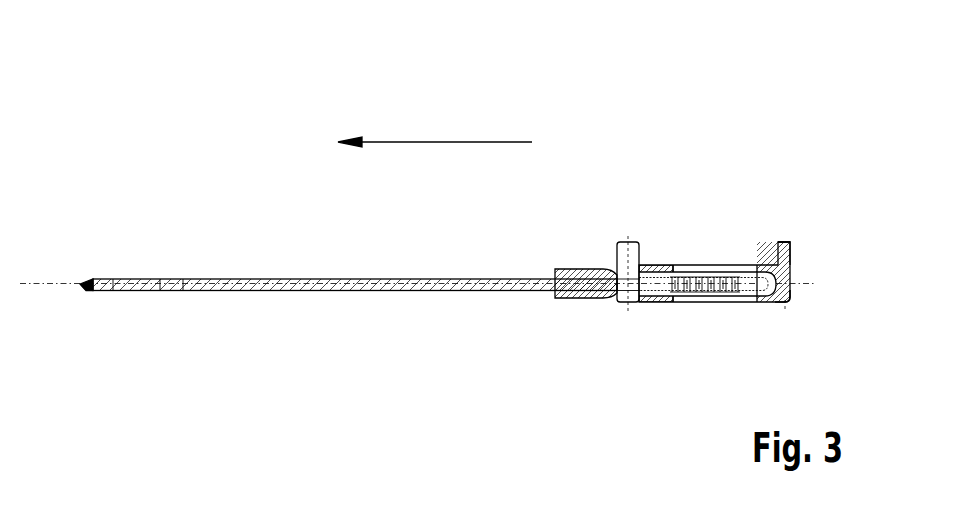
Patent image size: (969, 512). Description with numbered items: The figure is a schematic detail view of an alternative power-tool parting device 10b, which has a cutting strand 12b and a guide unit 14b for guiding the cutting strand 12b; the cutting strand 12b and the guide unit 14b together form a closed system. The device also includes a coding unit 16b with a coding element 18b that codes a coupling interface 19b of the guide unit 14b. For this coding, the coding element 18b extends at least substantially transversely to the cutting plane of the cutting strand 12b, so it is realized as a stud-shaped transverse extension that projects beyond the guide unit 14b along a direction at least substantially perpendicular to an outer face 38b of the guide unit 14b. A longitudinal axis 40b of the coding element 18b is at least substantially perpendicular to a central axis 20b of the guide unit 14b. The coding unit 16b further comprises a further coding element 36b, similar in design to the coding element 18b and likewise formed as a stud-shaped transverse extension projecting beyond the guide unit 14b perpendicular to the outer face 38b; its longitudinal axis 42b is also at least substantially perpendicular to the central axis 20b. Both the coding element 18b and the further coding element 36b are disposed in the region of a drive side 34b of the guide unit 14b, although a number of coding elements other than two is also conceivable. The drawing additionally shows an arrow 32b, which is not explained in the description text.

The power-tool parting device 10b is at (438, 221).
The cutting strand 12b is at (92, 278).
The guide unit 14b is at (262, 278).
The coding unit 16b is at (595, 346).
The coding element 18b is at (792, 262).
The coupling interface 19b is at (736, 336).
The central axis 20b is at (72, 293).
The puncturing direction 32b is at (447, 142).
The drive side 34b is at (791, 312).
The further coding element 36b is at (641, 262).
The outer face 38b is at (316, 292).
The longitudinal axis 40b is at (787, 241).
The longitudinal axis 42b is at (631, 241).